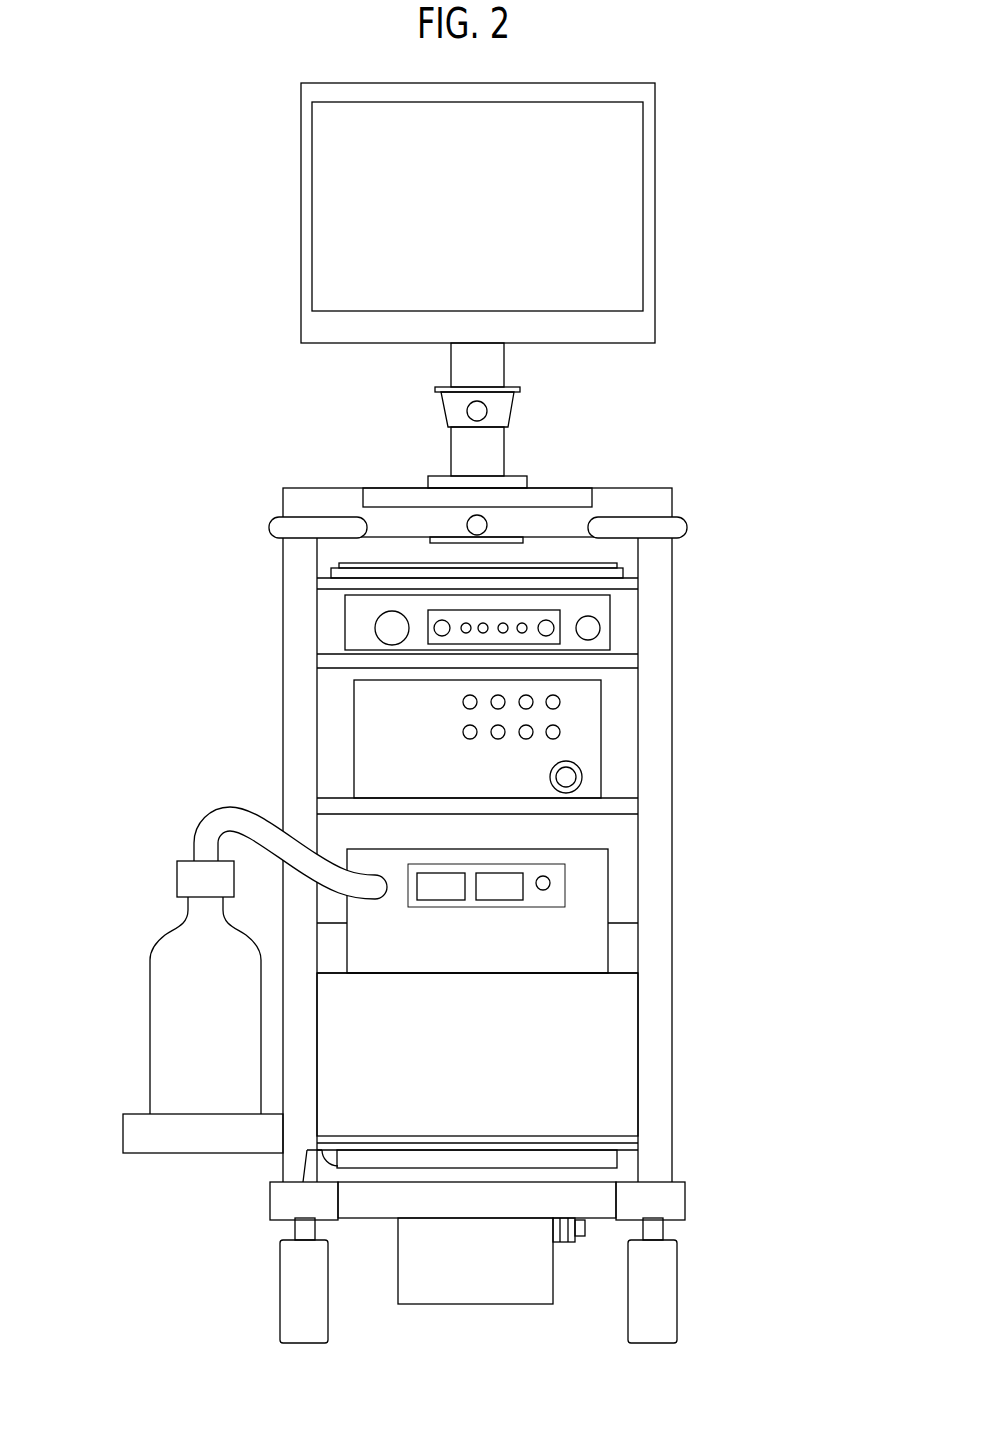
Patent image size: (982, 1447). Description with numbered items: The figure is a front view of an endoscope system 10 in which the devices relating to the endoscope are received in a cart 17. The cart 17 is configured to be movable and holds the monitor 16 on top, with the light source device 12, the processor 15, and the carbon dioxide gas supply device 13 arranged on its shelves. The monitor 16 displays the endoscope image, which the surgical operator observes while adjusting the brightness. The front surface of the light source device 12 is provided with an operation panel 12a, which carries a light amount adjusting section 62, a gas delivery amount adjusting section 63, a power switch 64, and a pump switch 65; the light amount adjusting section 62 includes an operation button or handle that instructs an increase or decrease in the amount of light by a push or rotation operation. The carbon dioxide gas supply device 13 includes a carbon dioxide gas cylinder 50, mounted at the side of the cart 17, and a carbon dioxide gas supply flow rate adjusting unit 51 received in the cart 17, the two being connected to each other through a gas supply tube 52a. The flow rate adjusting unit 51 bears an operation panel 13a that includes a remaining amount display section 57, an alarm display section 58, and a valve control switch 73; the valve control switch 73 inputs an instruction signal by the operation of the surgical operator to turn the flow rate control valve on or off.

The endoscope system 10 is at (706, 319).
The monitor 16 is at (300, 173).
The light source device 12 is at (516, 546).
The operation panel 12a is at (598, 607).
The light amount adjusting section 62 is at (549, 634).
The gas delivery amount adjusting section 63 is at (433, 631).
The power switch 64 is at (527, 621).
The pump switch 65 is at (499, 621).
The processor 15 is at (602, 722).
The carbon dioxide gas supply flow rate adjusting unit 51 is at (548, 911).
The operation panel 13a is at (425, 907).
The remaining amount display section 57 is at (447, 900).
The alarm display section 58 is at (493, 900).
The valve control switch 73 is at (543, 890).
The cart 17 is at (623, 1042).
The carbon dioxide gas supply device 13 is at (198, 790).
The gas supply tube 52a is at (207, 830).
The carbon dioxide gas cylinder 50 is at (157, 1028).